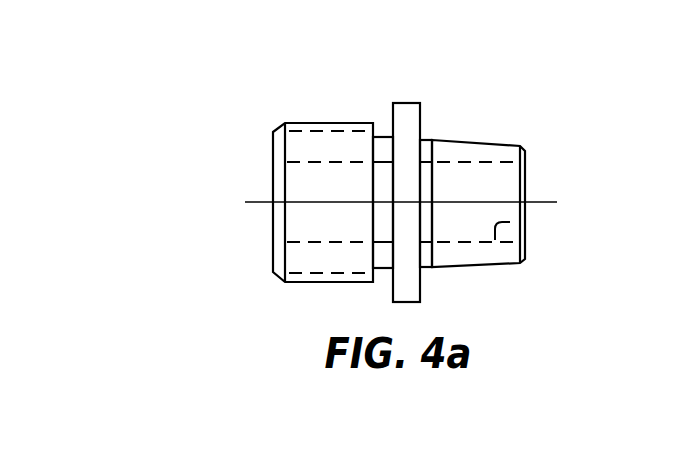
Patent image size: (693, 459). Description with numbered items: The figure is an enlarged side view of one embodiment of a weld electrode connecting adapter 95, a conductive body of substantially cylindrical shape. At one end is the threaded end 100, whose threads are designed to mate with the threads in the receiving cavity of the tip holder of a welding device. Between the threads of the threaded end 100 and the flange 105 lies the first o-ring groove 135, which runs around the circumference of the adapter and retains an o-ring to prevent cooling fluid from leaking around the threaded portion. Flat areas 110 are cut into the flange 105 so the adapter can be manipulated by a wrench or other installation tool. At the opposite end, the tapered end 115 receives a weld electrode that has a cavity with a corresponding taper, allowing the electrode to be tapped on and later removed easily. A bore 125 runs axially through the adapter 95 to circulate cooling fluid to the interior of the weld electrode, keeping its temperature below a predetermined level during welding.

The weld electrode connecting adapter 95 is at (168, 100).
The threaded end 100 is at (298, 110).
The first o-ring groove 135 is at (383, 120).
The flange 105 is at (407, 113).
The flat areas 110 is at (407, 220).
The tapered end 115 is at (495, 133).
The bore 125 is at (510, 222).